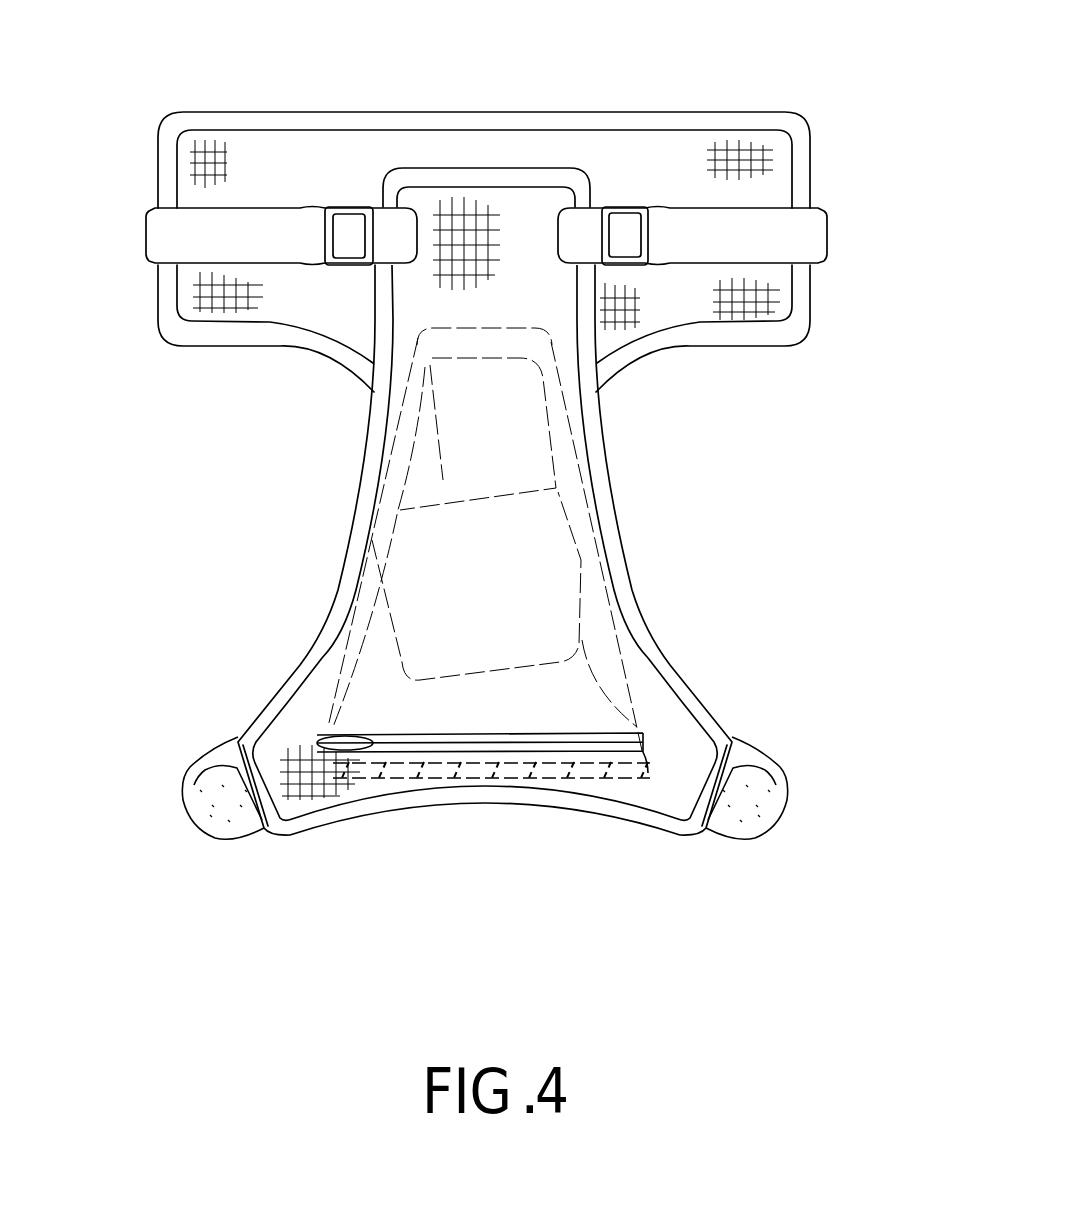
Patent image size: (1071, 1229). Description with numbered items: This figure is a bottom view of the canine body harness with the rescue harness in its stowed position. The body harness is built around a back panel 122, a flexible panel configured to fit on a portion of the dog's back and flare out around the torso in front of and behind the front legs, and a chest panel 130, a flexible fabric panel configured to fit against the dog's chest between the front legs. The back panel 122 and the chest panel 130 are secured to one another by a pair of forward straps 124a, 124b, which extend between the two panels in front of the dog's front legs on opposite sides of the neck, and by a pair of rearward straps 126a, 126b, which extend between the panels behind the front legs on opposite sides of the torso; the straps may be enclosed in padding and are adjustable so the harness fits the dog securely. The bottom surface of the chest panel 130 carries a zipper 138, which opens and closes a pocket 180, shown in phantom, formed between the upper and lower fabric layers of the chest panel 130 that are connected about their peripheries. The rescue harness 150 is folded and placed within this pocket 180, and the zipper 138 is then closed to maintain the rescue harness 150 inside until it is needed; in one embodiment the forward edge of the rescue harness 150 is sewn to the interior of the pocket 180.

The back panel 122 is at (632, 158).
The forward strap 124a is at (752, 218).
The forward strap 124b is at (257, 223).
The rearward strap 126a is at (790, 803).
The rearward strap 126b is at (200, 805).
The chest panel 130 is at (330, 514).
The zipper 138 is at (403, 748).
The rescue harness 150 is at (580, 590).
The pocket 180 is at (583, 487).